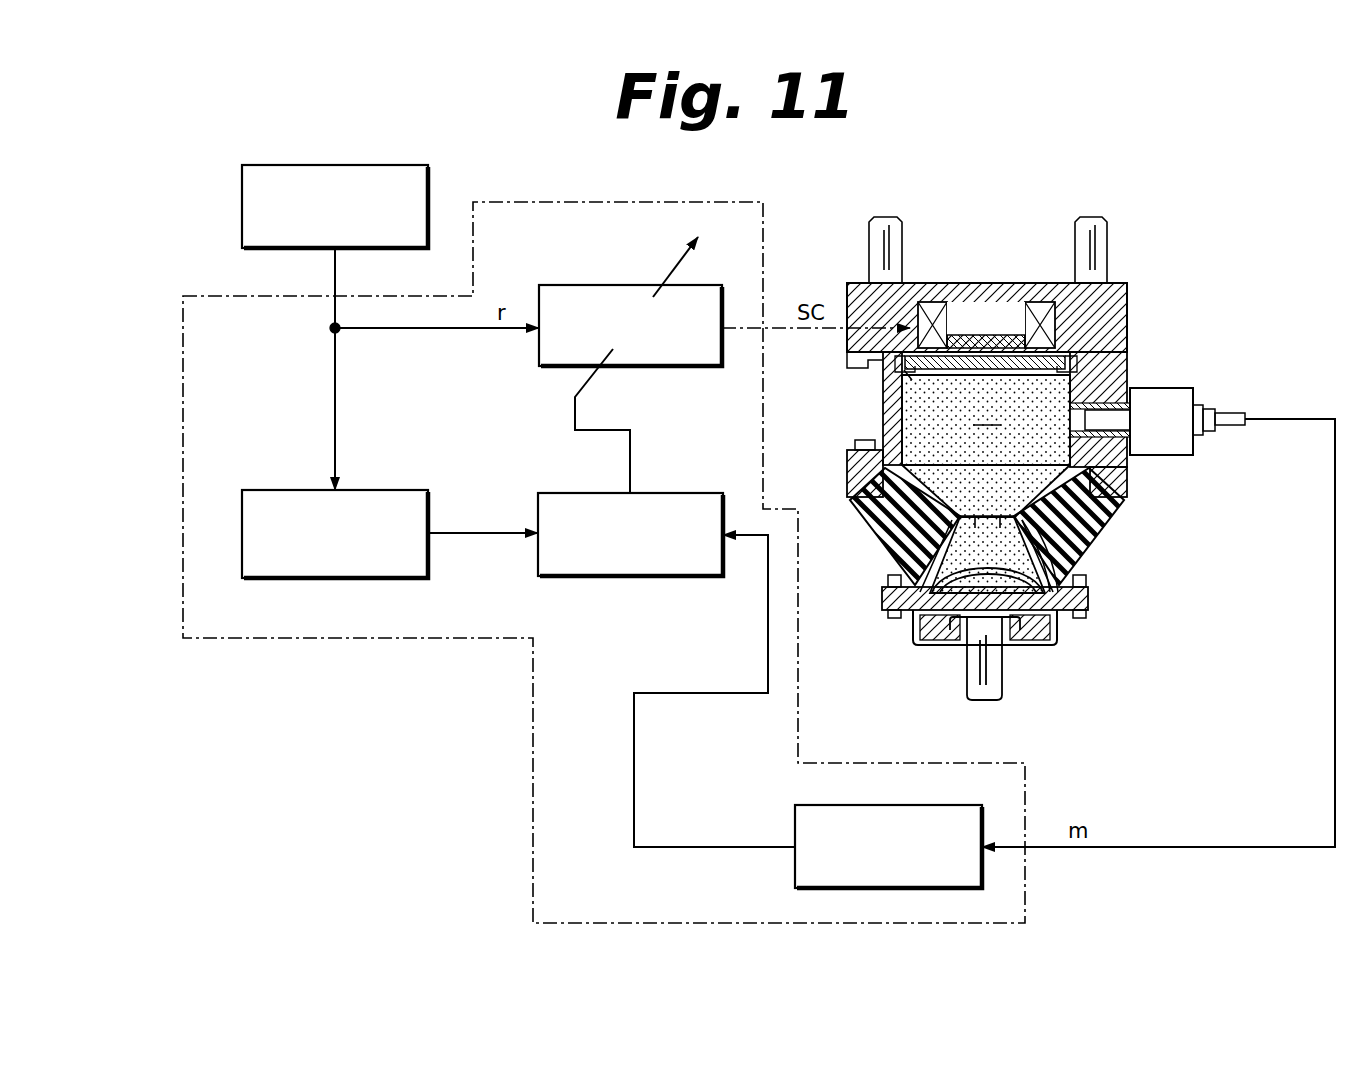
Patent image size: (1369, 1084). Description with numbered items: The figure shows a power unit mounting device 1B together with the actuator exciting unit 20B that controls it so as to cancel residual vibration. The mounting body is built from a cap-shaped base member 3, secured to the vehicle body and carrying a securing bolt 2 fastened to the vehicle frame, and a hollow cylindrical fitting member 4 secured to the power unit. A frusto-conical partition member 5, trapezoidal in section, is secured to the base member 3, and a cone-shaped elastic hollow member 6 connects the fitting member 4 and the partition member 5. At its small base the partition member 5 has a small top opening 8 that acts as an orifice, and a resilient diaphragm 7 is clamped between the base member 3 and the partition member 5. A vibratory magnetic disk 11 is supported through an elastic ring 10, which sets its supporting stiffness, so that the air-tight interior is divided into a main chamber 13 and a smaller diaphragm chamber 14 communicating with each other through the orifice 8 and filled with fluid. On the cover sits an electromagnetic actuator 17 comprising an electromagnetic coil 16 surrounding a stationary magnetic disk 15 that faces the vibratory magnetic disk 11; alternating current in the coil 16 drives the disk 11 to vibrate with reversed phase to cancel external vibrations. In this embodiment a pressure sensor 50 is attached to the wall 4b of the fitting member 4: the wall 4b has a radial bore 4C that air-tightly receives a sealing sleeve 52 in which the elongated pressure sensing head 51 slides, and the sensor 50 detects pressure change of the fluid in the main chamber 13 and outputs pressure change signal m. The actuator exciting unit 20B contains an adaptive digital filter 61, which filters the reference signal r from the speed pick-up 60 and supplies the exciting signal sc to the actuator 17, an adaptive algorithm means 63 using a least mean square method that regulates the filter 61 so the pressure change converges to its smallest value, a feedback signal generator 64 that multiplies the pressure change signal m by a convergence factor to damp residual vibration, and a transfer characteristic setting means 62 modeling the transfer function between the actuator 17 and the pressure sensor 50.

The speed pick-up 60 is at (410, 165).
The adaptive digital filter 61 is at (577, 285).
The transfer characteristic setting means 62 is at (265, 490).
The adaptive algorithm means 63 is at (686, 493).
The feedback signal generator 64 is at (795, 818).
The actuator exciting unit 20B is at (183, 325).
The power unit mounting device 1B is at (1153, 303).
The electromagnetic actuator 17 is at (986, 259).
The electromagnetic coil 16 is at (938, 302).
The stationary magnetic disk 15 is at (990, 335).
The vibratory magnetic disk 11 is at (1010, 356).
The fitting member 4 is at (883, 420).
The wall 4b is at (1105, 365).
The radial bore 4C is at (1118, 462).
The pressure sensing head 51 is at (1088, 395).
The sealing sleeve 52 is at (1100, 410).
The pressure sensor 50 is at (1185, 405).
The main chamber 13 is at (986, 446).
The elastic ring 10 is at (905, 378).
The elastic hollow member 6 is at (1092, 515).
The top opening 8 is at (960, 510).
The partition member 5 is at (930, 545).
The diaphragm chamber 14 is at (1042, 565).
The resilient diaphragm 7 is at (1010, 578).
The base member 3 is at (910, 627).
The securing bolt 2 is at (975, 670).